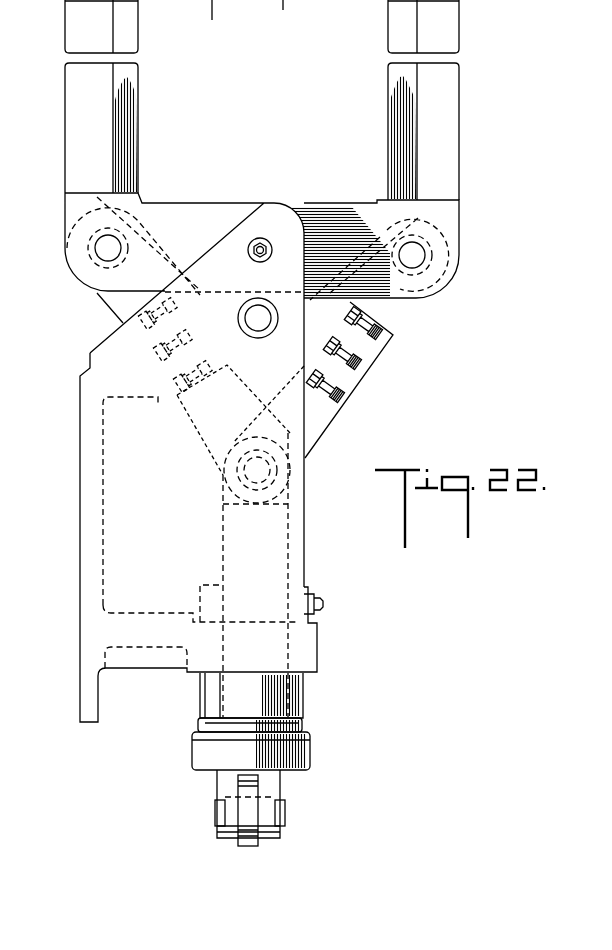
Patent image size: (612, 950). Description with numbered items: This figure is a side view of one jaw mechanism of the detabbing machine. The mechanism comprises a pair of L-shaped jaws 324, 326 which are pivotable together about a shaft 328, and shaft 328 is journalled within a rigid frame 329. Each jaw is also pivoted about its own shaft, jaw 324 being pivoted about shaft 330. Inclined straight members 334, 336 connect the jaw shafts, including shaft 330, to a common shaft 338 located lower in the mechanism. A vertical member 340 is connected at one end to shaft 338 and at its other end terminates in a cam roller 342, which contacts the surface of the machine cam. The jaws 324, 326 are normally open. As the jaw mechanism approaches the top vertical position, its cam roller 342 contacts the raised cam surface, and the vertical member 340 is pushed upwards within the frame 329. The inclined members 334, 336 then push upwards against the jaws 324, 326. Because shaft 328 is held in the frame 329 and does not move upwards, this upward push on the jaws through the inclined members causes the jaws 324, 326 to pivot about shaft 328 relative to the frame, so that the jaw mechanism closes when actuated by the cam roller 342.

The L-shaped jaw 324 is at (450, 132).
The L-shaped jaw 326 is at (75, 144).
The shaft 328 is at (268, 234).
The rigid frame 329 is at (90, 518).
The shaft 330 is at (422, 257).
The inclined straight member 334 is at (364, 348).
The inclined straight member 336 is at (172, 366).
The shaft 338 is at (290, 480).
The vertical member 340 is at (278, 560).
The cam roller 342 is at (238, 842).